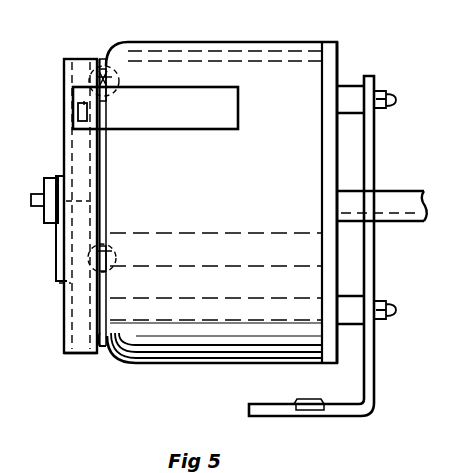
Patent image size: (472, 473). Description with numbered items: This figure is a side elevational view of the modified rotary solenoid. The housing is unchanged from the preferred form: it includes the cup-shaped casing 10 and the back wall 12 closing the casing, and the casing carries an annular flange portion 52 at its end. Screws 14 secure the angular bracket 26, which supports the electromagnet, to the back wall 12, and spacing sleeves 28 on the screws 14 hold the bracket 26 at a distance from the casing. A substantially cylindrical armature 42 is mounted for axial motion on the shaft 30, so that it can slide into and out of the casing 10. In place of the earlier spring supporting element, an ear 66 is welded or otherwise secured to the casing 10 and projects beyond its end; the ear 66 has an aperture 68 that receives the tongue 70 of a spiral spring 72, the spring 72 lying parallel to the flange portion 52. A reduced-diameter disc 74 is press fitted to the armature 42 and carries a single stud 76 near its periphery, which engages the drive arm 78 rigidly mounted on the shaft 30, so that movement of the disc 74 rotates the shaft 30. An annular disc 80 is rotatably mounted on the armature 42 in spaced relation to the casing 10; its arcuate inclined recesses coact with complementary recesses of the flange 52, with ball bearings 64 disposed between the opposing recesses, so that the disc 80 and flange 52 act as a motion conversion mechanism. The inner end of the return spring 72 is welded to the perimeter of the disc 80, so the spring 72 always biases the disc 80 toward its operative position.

The cup-shaped casing 10 is at (120, 35).
The back wall 12 is at (323, 65).
The screws 14 is at (388, 93).
The angular bracket 26 is at (363, 146).
The spacing sleeves 28 is at (340, 85).
The shaft 30 is at (385, 190).
The armature 42 is at (99, 163).
The flange portion 52 is at (96, 329).
The ball bearing 64 is at (103, 70).
The ear 66 is at (161, 105).
The aperture 68 is at (76, 93).
The tongue 70 is at (71, 102).
The spiral spring 72 is at (56, 296).
The disc 74 is at (50, 256).
The stud 76 is at (33, 193).
The drive arm 78 is at (36, 170).
The annular disc 80 is at (68, 331).